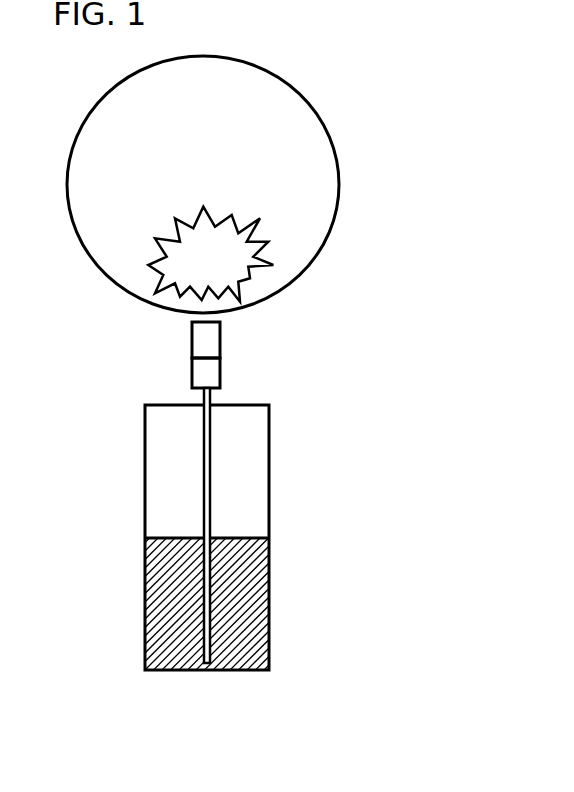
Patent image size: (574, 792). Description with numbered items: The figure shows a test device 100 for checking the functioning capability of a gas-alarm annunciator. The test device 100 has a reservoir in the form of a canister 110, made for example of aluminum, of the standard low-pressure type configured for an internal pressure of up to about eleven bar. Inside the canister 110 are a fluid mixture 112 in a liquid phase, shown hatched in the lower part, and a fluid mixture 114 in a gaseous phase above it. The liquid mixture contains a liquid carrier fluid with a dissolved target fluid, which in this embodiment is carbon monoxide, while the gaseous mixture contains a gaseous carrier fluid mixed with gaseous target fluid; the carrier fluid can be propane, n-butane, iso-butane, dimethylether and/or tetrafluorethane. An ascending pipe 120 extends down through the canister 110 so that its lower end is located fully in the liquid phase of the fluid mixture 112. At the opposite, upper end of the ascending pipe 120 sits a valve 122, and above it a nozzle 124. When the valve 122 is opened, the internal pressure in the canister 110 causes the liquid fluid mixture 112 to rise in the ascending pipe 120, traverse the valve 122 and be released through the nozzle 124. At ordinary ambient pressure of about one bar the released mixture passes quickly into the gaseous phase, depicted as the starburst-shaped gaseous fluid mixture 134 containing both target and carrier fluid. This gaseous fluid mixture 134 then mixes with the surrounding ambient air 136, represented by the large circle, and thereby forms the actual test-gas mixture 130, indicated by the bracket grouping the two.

The test device 100 is at (428, 63).
The canister 110 is at (269, 520).
The fluid mixture in liquid phase 112 is at (267, 605).
The fluid mixture in gaseous phase 114 is at (259, 443).
The ascending pipe 120 is at (211, 478).
The valve 122 is at (210, 370).
The nozzle 124 is at (210, 338).
The test-gas mixture 130 is at (404, 112).
The gaseous fluid mixture 134 is at (273, 265).
The ambient air 136 is at (316, 141).